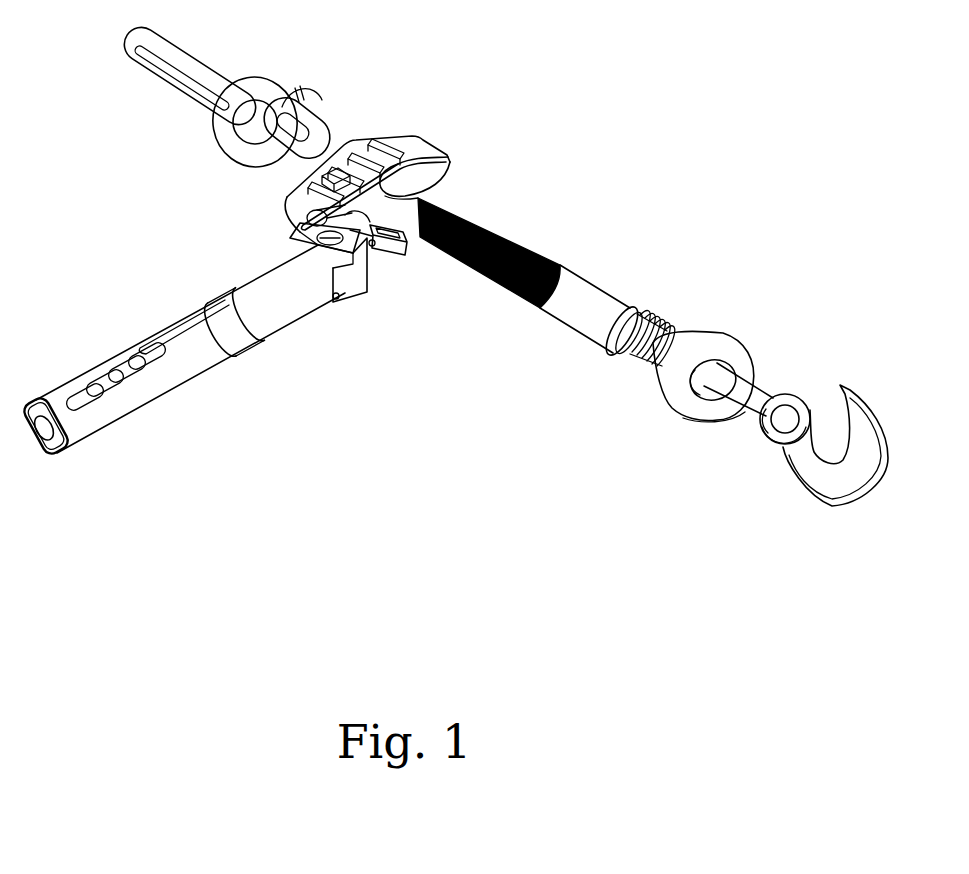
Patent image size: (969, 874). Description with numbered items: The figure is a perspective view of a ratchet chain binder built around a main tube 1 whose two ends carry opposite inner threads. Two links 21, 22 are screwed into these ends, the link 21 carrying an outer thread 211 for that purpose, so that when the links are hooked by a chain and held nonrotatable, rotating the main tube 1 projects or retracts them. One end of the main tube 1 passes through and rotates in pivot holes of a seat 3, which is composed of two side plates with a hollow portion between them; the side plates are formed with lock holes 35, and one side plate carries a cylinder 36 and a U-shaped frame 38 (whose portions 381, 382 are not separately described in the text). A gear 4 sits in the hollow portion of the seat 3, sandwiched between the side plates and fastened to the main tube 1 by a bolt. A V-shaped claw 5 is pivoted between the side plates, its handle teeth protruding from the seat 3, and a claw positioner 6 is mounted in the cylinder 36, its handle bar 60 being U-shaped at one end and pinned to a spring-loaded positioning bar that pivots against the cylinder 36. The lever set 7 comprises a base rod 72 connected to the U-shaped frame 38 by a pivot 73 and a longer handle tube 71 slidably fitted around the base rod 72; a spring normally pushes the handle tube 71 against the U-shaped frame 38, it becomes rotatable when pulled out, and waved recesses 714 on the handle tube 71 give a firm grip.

The main tube 1 is at (575, 262).
The link 21 is at (727, 343).
The outer thread 211 is at (647, 313).
The link 22 is at (323, 147).
The seat 3 is at (277, 204).
The lock holes 35 is at (440, 160).
The cylinder 36 is at (443, 195).
The U-shaped frame 38 is at (292, 238).
The clamp member 381 is at (352, 262).
The bolt 382 is at (337, 299).
The gear 4 is at (386, 140).
The claw 5 is at (313, 194).
The claw positioner 6 is at (400, 266).
The handle bar 60 is at (403, 254).
The lever set 7 is at (153, 323).
The handle tube 71 is at (150, 386).
The waved recesses 714 is at (103, 372).
The base rod 72 is at (342, 278).
The pivot 73 is at (300, 232).